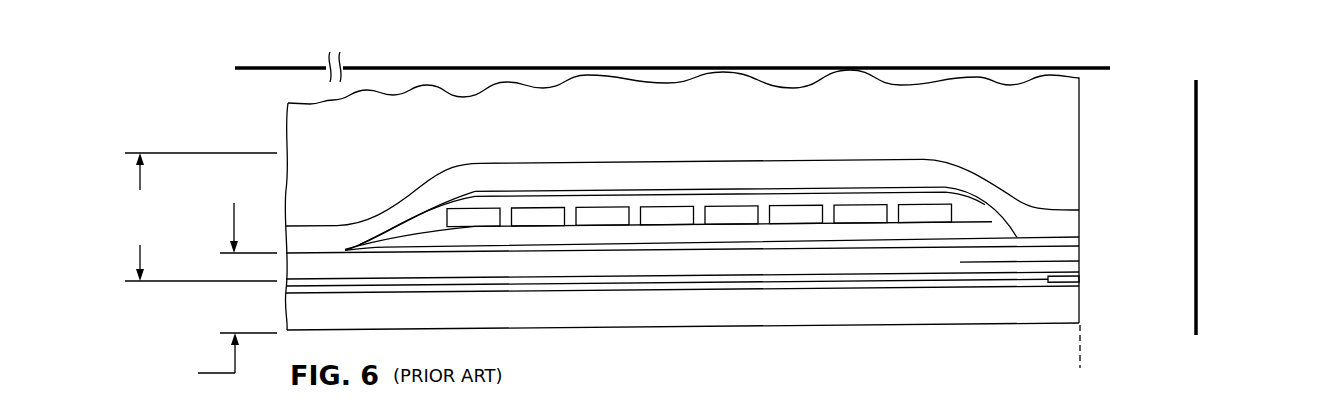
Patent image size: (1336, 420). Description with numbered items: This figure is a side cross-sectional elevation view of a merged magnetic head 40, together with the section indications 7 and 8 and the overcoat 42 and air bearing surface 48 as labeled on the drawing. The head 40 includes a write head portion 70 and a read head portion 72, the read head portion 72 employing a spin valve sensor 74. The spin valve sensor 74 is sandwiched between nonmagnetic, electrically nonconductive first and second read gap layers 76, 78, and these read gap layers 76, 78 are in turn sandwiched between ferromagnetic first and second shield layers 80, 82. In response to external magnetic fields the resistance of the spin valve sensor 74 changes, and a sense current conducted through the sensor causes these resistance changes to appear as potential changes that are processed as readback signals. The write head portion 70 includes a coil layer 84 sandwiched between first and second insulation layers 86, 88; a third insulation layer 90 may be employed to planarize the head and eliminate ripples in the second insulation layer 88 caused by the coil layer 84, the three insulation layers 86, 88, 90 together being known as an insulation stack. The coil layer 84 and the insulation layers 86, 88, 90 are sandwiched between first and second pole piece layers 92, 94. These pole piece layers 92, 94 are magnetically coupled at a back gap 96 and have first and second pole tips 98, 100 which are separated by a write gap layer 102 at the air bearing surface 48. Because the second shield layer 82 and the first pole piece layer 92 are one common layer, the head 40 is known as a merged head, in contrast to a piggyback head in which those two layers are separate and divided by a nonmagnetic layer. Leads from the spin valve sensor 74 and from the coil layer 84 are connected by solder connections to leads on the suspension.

The section line 7- 7 is at (1210, 330).
The section line 8- 8 is at (1103, 56).
The merged magnetic head 40 is at (268, 116).
The overcoat layer 42 is at (1065, 112).
The air bearing surface (ABS) 48 is at (1080, 370).
The write head portion 70 is at (189, 217).
The read head portion 72 is at (189, 359).
The spin valve sensor 74 is at (1080, 282).
The first read gap layer 76 is at (745, 290).
The second read gap layer 78 is at (713, 278).
The first shield layer 80 is at (820, 313).
The second shield layer 82 is at (932, 258).
The coil layer 84 is at (662, 212).
The first insulation layer 86 is at (609, 233).
The second insulation layer 88 is at (965, 215).
The third insulation layer 90 is at (512, 195).
The first pole piece layer 92 is at (932, 258).
The second pole piece layer 94 is at (833, 163).
The back gap 96 is at (320, 250).
The first pole tip 98 is at (1080, 261).
The second pole tip 100 is at (1072, 220).
The write gap layer 102 is at (1080, 240).